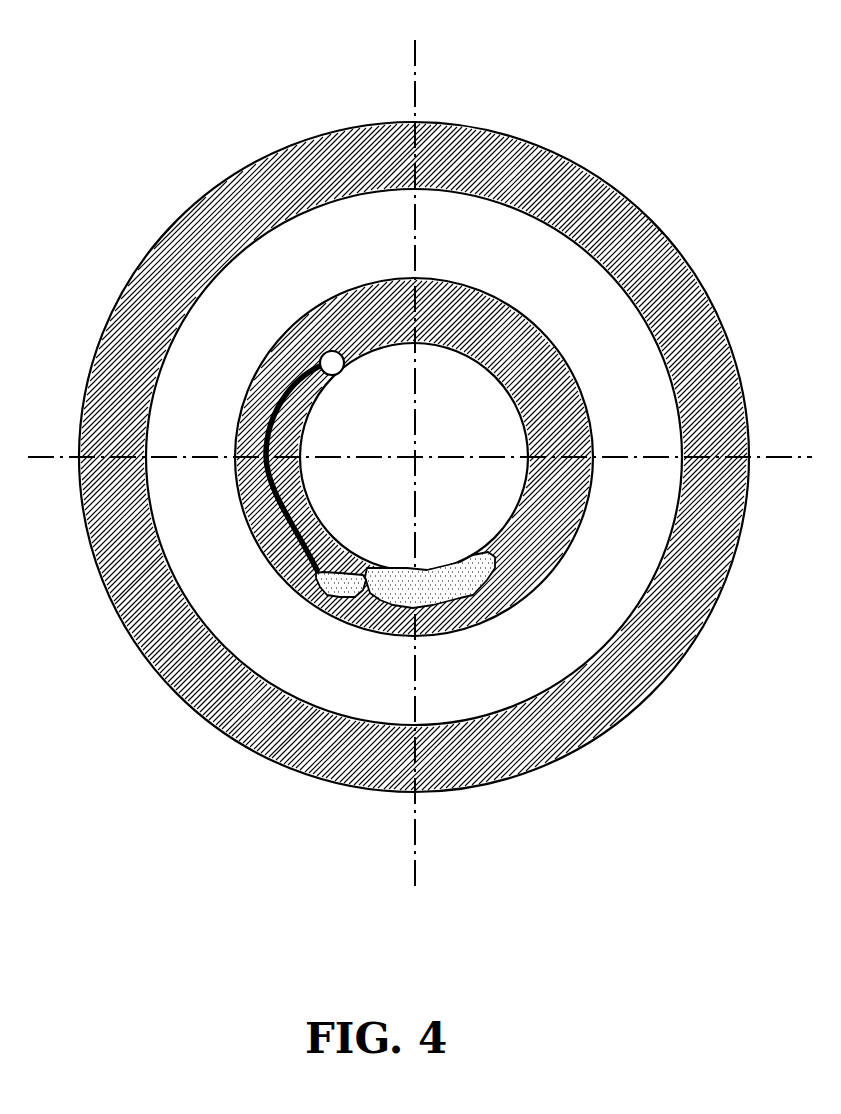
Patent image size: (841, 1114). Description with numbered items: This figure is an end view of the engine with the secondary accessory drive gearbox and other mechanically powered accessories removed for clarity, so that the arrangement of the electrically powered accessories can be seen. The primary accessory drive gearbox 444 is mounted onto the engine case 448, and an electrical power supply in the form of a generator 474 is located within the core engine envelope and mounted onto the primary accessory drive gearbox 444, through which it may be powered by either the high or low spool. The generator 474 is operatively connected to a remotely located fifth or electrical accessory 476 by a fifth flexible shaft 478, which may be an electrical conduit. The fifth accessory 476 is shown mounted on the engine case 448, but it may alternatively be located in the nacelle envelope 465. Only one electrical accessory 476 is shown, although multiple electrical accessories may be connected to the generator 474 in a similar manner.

The nacelle envelope 465 is at (558, 188).
The engine case 448 is at (512, 520).
The fifth accessory 476 is at (333, 351).
The fifth flexible shaft 478 is at (297, 523).
The generator 474 is at (337, 586).
The primary accessory drive gearbox 444 is at (444, 586).